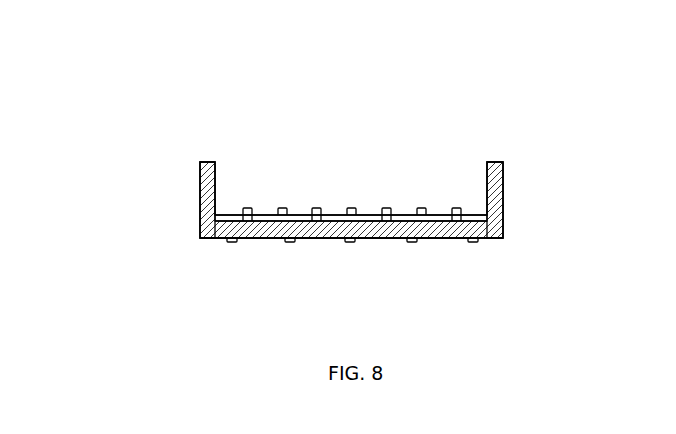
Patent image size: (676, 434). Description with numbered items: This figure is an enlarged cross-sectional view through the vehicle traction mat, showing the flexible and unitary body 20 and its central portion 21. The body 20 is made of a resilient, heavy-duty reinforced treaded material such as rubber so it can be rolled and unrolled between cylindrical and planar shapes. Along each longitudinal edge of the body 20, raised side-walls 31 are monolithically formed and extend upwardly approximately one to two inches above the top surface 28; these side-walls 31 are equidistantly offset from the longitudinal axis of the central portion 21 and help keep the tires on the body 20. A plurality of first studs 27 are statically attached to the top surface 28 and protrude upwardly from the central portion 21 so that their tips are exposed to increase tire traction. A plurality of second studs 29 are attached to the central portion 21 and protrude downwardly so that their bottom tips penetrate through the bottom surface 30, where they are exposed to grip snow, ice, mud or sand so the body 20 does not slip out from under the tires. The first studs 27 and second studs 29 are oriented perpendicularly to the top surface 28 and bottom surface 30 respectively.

The body 20 is at (384, 84).
The central portion 21 is at (430, 236).
The first studs 27 is at (282, 208).
The top surface 28 is at (335, 220).
The second studs 29 is at (350, 242).
The bottom surface 30 is at (377, 238).
The raised side-walls 31 is at (205, 182).